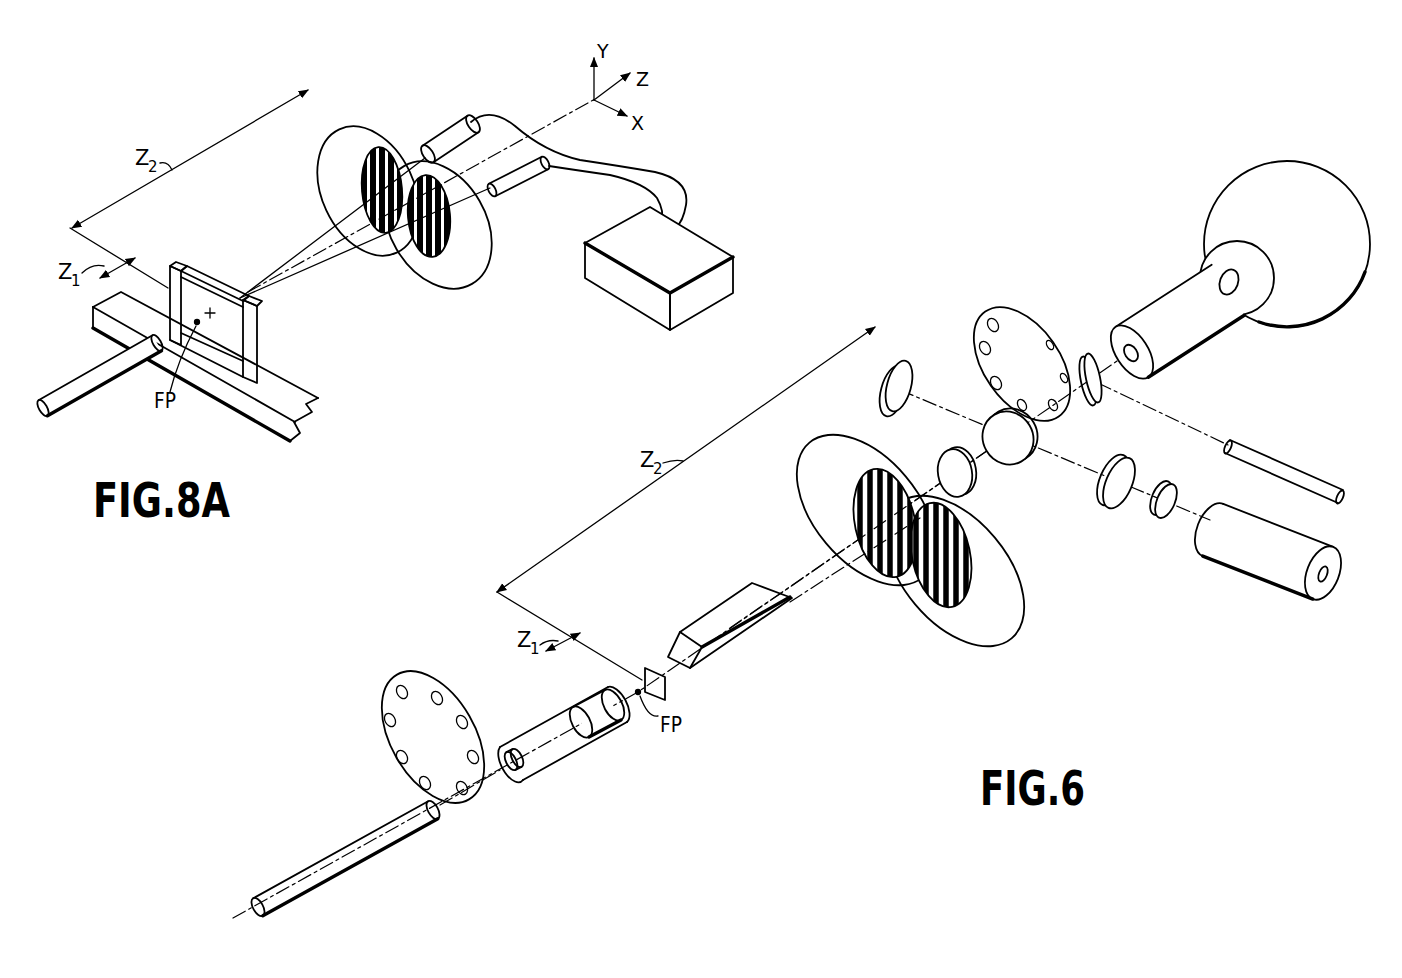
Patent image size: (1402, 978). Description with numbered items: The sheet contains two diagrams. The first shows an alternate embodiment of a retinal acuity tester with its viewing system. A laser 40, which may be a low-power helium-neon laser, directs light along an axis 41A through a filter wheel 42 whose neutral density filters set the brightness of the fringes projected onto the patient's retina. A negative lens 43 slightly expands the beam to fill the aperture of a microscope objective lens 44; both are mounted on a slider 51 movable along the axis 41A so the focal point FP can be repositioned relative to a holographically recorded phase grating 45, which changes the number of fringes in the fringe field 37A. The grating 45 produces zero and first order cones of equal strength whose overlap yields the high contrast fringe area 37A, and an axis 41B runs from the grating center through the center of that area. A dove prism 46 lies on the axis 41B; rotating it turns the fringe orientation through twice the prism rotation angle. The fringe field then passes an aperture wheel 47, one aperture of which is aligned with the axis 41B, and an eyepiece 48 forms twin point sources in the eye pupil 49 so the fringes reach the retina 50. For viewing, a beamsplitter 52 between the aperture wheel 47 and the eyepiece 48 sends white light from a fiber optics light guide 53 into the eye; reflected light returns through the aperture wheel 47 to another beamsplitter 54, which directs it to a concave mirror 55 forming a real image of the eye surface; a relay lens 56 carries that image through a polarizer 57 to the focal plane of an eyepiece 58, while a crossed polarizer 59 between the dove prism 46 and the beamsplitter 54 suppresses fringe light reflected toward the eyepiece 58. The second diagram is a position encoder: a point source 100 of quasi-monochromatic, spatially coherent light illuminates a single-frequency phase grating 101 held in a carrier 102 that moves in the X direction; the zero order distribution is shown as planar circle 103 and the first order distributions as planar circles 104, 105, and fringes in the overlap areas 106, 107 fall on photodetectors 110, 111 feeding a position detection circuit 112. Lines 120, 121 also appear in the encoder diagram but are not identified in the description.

In FIG. 8A, the point source 100 is at (130, 370).
In FIG. 8A, the phase grating 101 is at (195, 290).
In FIG. 8A, the carrier 102 is at (257, 347).
In FIG. 8A, the planar circle 103 is at (405, 207).
In FIG. 8A, the planar circle 104 is at (356, 131).
In FIG. 8A, the planar circle 105 is at (492, 274).
In FIG. 8A, the area of overlap 106 is at (392, 230).
In FIG. 8A, the area of overlap 107 is at (419, 250).
In FIG. 8A, the photodetector 110 is at (448, 132).
In FIG. 8A, the photodetector 111 is at (531, 181).
In FIG. 8A, the position detection circuit 112 is at (688, 242).
In FIG. 8A, the light ray 120 is at (303, 251).
In FIG. 8A, the light ray 121 is at (314, 267).
In FIG. 6, the fringe field area 37A is at (870, 505).
In FIG. 6, the laser 40 is at (308, 868).
In FIG. 6, the axis 41A is at (453, 801).
In FIG. 6, the axis 41B is at (797, 587).
In FIG. 6, the filter wheel 42 is at (398, 740).
In FIG. 6, the negative lens 43 is at (512, 770).
In FIG. 6, the microscope objective lens 44 is at (612, 722).
In FIG. 6, the grating 45 is at (665, 691).
In FIG. 6, the dove prism 46 is at (713, 613).
In FIG. 6, the aperture wheel 47 is at (1022, 322).
In FIG. 6, the eyepiece 48 is at (1158, 310).
In FIG. 6, the eye pupil 49 is at (1240, 284).
In FIG. 6, the retina 50 is at (1323, 196).
In FIG. 6, the slider 51 is at (565, 745).
In FIG. 6, the beamsplitter 52 is at (1100, 402).
In FIG. 6, the fiber optics light guide 53 is at (1291, 460).
In FIG. 6, the beamsplitter 54 is at (1015, 455).
In FIG. 6, the concave mirror 55 is at (904, 399).
In FIG. 6, the relay lens 56 is at (1103, 501).
In FIG. 6, the polarizer 57 is at (1157, 520).
In FIG. 6, the eyepiece 58 is at (1240, 564).
In FIG. 6, the crossed polarizer 59 is at (946, 458).